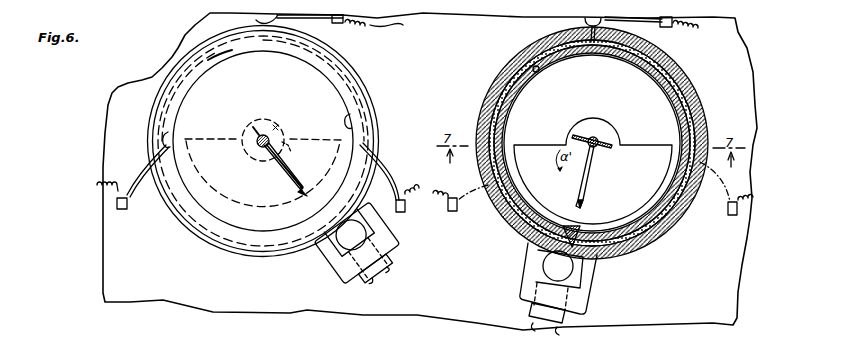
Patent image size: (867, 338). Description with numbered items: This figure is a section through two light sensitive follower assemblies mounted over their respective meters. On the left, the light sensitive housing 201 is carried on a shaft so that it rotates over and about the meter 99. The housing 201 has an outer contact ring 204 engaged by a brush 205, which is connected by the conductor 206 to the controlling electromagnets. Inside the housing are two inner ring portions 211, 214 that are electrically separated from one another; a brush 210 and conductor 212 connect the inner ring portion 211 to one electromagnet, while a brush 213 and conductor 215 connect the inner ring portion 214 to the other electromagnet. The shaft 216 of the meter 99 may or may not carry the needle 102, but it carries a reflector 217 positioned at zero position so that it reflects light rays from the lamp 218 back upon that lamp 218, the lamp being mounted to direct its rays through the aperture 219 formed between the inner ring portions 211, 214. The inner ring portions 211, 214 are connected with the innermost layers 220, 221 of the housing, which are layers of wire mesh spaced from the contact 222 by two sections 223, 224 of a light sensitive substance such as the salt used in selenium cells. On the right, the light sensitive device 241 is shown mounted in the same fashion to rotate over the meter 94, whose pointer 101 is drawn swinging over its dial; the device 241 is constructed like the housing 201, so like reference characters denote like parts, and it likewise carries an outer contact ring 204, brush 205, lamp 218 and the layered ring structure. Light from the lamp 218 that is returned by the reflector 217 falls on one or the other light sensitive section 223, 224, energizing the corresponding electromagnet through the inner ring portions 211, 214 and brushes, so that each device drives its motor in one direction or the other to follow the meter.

The meter 94 is at (538, 130).
The meter 99 is at (218, 137).
The pointer 101 is at (593, 168).
The needle 102 is at (278, 166).
The light sensitive housing 201 is at (183, 224).
The outer contact ring 204 is at (343, 68).
The brush 205 is at (290, 20).
The conductor 206 is at (399, 27).
The brush 210 is at (147, 165).
The inner ring portion 211 is at (218, 218).
The conductor 212 is at (97, 184).
The brush 213 is at (380, 169).
The inner ring portion 214 is at (350, 120).
The conductor 215 is at (416, 188).
The shaft 216 is at (259, 135).
The reflector 217 is at (279, 128).
The lamp 218 is at (340, 246).
The aperture 219 is at (289, 148).
The innermost layer 220 is at (522, 70).
The innermost layer 221 is at (623, 56).
The contact 222 is at (605, 52).
The section of light sensitive substance 223 is at (610, 50).
The section of light sensitive substance 224 is at (612, 70).
The light sensitive device 241 is at (661, 235).